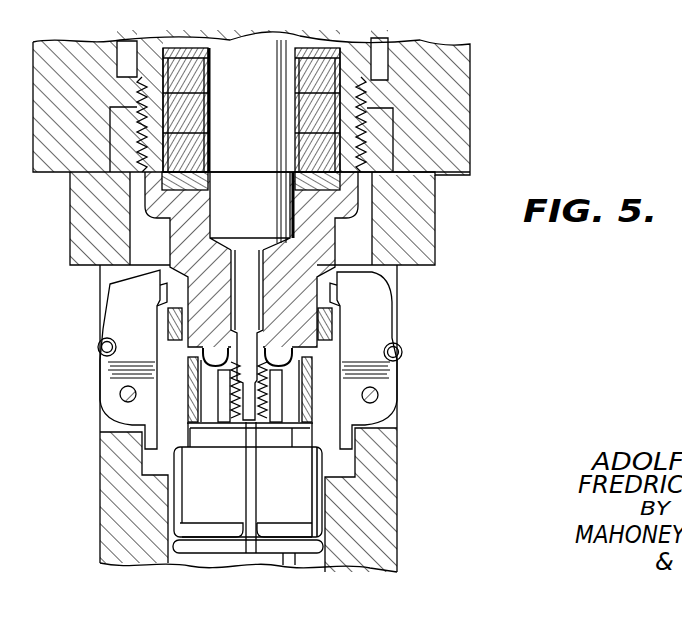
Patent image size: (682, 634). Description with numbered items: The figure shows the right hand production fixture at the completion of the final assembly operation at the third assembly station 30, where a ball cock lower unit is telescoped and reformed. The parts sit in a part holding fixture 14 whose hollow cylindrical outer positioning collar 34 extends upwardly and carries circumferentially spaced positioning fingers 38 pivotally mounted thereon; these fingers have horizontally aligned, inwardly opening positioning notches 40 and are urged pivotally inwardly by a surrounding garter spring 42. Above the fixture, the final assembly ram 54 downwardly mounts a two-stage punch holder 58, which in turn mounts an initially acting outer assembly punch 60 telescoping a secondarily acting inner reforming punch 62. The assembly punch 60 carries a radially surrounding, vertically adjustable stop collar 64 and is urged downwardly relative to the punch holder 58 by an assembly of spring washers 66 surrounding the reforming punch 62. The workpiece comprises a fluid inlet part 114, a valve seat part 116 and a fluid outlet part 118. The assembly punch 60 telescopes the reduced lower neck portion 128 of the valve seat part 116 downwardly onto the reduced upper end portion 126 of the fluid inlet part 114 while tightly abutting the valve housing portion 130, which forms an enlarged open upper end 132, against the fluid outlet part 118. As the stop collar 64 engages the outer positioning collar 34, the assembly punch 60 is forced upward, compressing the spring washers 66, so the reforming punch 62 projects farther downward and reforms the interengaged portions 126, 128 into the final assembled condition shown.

The part holding fixture 14 is at (380, 506).
The third assembly station 30 is at (99, 452).
The outer positioning collar 34 is at (103, 514).
The positioning finger 38 is at (113, 308).
The positioning notch 40 is at (160, 289).
The garter spring 42 is at (97, 350).
The final assembly ram 54 is at (473, 88).
The punch holder 58 is at (440, 130).
The assembly punch 60 is at (398, 281).
The reforming punch 62 is at (248, 289).
The stop collar 64 is at (408, 233).
The spring washers 66 is at (186, 64).
The fluid inlet part 114 is at (285, 555).
The valve seat part 116 is at (340, 388).
The fluid outlet part 118 is at (308, 473).
The reduced upper end portion 126 is at (330, 424).
The reduced lower neck portion 128 is at (394, 398).
The valve housing portion 130 is at (402, 345).
The open upper end 132 is at (170, 332).